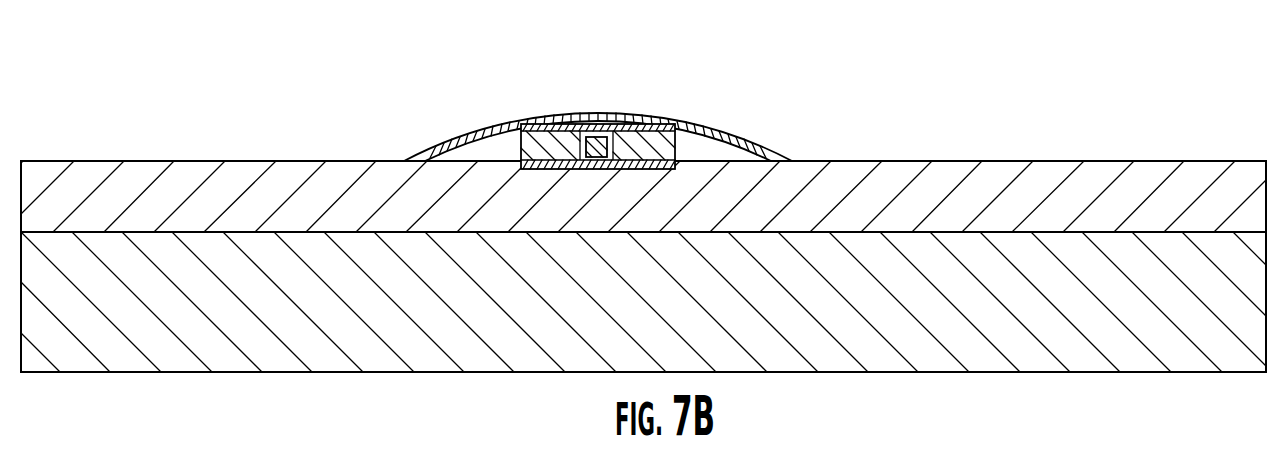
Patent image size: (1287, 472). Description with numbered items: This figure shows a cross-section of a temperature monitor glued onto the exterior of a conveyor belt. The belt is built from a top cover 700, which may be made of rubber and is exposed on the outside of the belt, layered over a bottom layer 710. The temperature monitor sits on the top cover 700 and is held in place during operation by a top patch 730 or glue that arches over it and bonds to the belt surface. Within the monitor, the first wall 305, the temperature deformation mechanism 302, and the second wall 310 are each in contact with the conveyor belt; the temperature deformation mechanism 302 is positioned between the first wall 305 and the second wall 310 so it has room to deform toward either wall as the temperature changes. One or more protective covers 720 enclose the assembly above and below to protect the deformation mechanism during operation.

The top cover 700 is at (1005, 180).
The bottom layer 710 is at (987, 373).
The top patch 730 is at (442, 140).
The second wall 310 is at (519, 142).
The protective cover 720 is at (582, 127).
The first wall 305 is at (664, 142).
The temperature deformation mechanism 302 is at (598, 142).